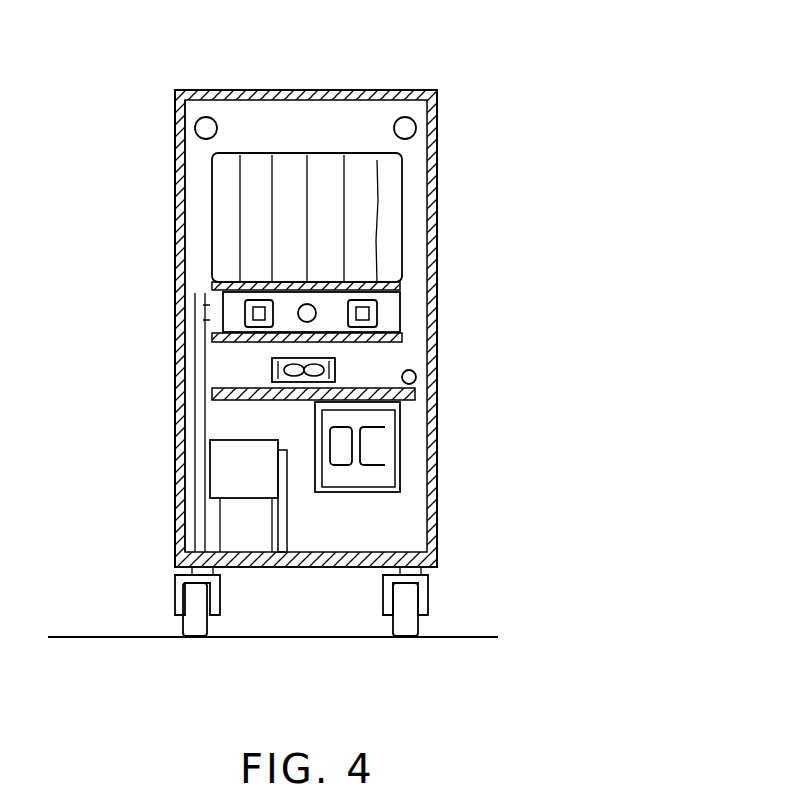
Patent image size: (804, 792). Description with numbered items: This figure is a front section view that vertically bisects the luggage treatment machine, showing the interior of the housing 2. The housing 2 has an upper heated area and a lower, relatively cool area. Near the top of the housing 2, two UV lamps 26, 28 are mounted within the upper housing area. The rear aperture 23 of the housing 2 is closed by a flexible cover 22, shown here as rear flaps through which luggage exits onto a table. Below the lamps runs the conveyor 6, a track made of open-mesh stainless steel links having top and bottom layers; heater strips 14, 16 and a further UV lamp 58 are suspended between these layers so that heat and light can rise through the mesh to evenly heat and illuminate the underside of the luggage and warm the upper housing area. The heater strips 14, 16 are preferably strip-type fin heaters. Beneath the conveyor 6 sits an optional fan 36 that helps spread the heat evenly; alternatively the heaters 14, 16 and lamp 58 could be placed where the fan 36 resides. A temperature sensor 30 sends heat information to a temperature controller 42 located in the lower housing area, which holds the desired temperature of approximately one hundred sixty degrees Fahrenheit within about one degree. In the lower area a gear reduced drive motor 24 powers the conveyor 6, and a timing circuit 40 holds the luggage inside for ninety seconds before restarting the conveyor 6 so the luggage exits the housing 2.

The housing 2 is at (365, 90).
The UV lamp 26 is at (206, 117).
The UV lamp 28 is at (416, 121).
The rear aperture 23 is at (212, 193).
The cover 22 is at (370, 212).
The conveyor 6 is at (363, 283).
The UV lamp 58 is at (400, 292).
The heating element 14 is at (245, 305).
The heating element 16 is at (382, 306).
The fan 36 is at (272, 368).
The temperature sensor 30 is at (416, 372).
The gear reduced drive motor 24 is at (215, 463).
The timing circuit 40 is at (340, 457).
The temperature controller 42 is at (378, 452).